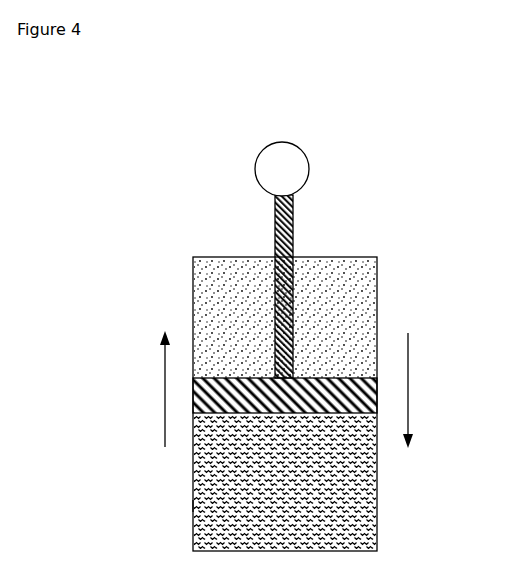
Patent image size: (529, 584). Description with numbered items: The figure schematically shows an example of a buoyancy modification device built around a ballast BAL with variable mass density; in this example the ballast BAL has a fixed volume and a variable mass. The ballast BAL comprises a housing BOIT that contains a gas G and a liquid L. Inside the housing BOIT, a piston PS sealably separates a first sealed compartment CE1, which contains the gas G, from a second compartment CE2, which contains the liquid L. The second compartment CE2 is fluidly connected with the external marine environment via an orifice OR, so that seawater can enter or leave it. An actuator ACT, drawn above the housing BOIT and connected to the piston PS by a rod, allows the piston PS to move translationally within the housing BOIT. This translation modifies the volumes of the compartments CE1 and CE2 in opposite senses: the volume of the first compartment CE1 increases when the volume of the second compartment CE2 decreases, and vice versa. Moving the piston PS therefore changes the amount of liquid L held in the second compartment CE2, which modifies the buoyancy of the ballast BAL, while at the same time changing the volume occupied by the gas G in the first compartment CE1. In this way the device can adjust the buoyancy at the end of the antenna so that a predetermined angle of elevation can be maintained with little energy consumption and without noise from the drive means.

The ballast BAL is at (150, 222).
The actuator ACT is at (309, 162).
The housing BOIT is at (363, 257).
The gas G is at (193, 297).
The first sealed compartment CE1 is at (377, 296).
The piston PS is at (192, 400).
The liquid L is at (208, 476).
The orifice OR is at (193, 505).
The second compartment CE2 is at (377, 512).